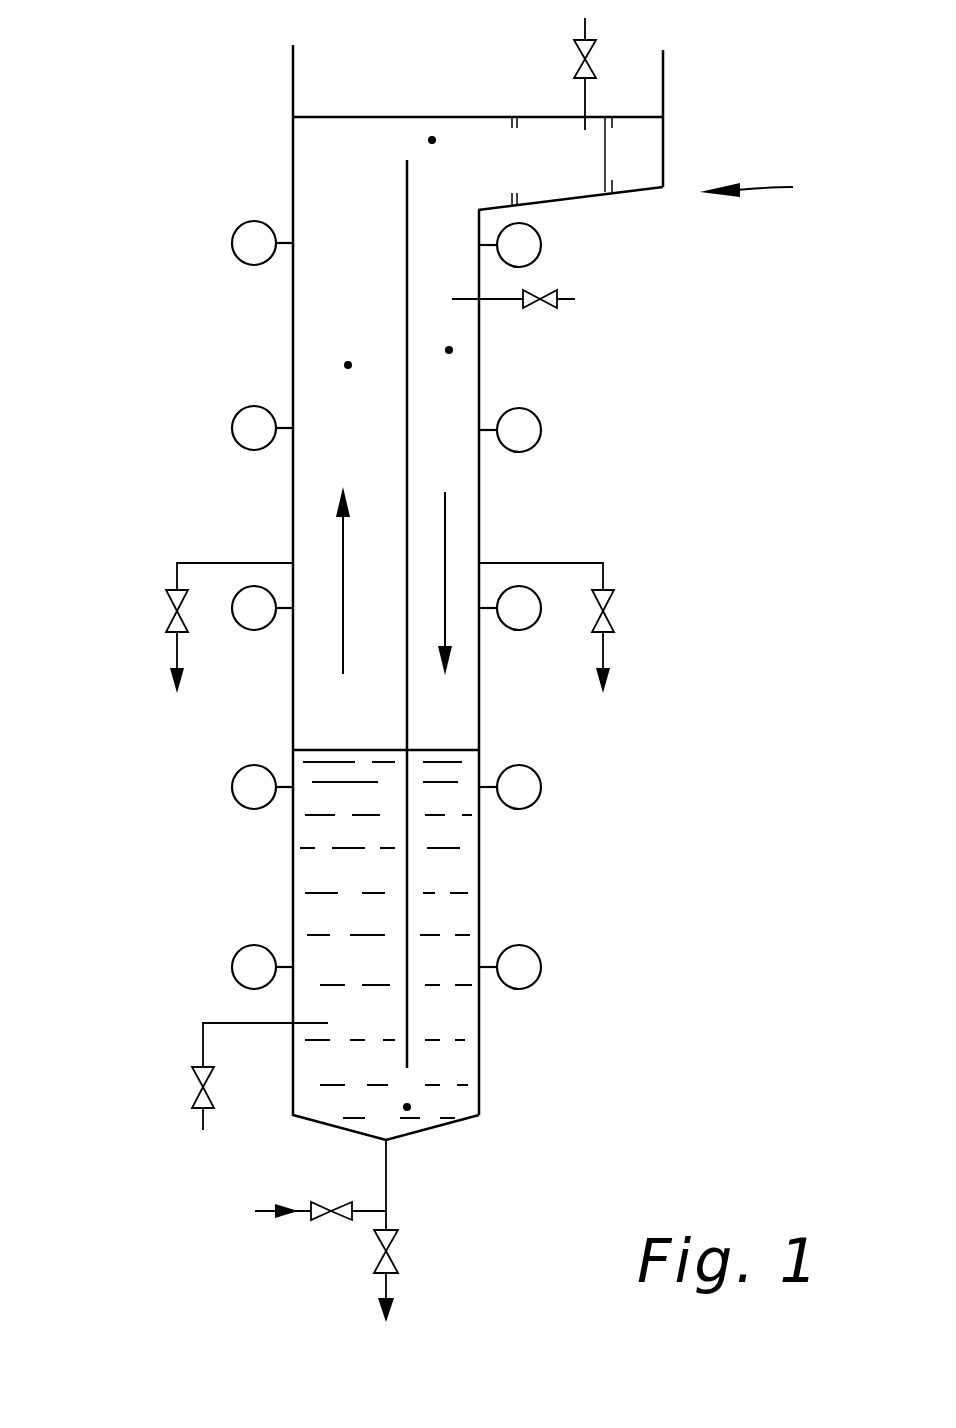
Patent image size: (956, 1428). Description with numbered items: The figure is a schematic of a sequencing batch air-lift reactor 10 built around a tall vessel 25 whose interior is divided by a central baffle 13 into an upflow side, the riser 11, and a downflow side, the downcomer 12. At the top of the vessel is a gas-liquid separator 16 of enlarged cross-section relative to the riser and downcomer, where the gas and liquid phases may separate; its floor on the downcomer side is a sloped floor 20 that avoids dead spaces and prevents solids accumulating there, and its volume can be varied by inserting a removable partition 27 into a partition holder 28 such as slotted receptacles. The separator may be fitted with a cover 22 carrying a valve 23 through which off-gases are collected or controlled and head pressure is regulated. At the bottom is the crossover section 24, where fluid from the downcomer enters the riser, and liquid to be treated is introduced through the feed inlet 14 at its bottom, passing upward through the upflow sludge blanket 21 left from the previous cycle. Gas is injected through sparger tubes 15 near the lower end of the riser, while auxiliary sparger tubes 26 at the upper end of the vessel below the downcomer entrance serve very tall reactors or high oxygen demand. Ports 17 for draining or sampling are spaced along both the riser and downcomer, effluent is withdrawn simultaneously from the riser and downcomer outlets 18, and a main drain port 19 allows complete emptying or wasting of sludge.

The sequencing batch air-lift reactor 10 is at (764, 188).
The riser 11 is at (346, 364).
The downcomer 12 is at (451, 350).
The baffle 13 is at (405, 213).
The feed inlet 14 is at (313, 1225).
The sparger tubes 15 is at (198, 1122).
The gas-liquid separator 16 is at (432, 137).
The ports 17 is at (233, 428).
The outlets 18 is at (168, 604).
The main drain port 19 is at (397, 1245).
The sloped floor 20 is at (553, 198).
The upflow sludge blanket 21 is at (453, 1058).
The cover 22 is at (362, 117).
The valve 23 is at (590, 92).
The crossover section 24 is at (409, 1106).
The vessel 25 is at (480, 497).
The auxiliary sparger tubes 26 is at (548, 292).
The removable partition 27 is at (608, 152).
The partition holder 28 is at (510, 198).